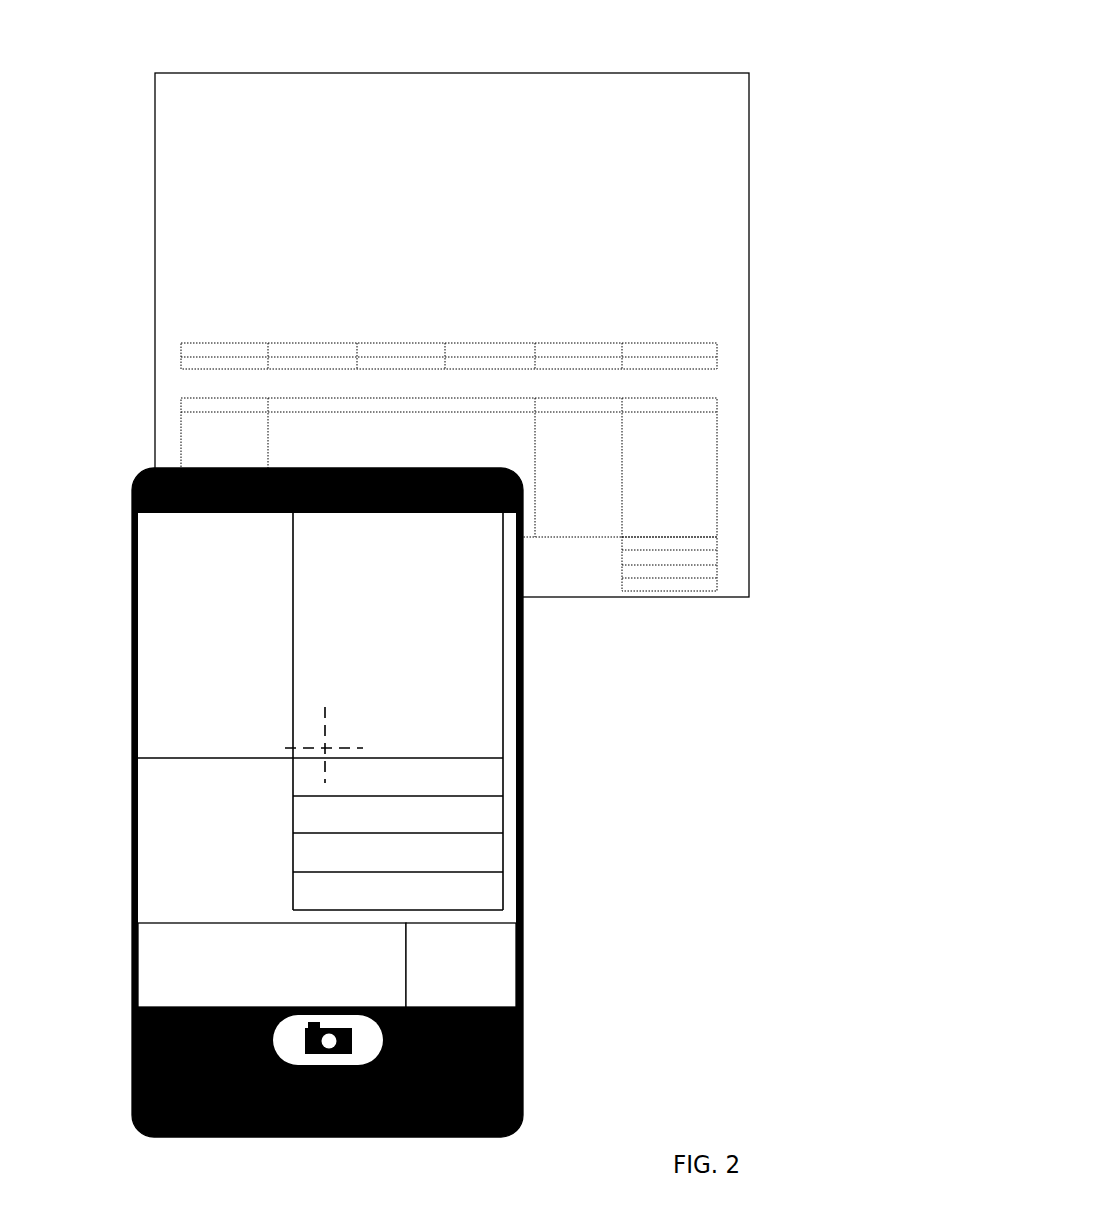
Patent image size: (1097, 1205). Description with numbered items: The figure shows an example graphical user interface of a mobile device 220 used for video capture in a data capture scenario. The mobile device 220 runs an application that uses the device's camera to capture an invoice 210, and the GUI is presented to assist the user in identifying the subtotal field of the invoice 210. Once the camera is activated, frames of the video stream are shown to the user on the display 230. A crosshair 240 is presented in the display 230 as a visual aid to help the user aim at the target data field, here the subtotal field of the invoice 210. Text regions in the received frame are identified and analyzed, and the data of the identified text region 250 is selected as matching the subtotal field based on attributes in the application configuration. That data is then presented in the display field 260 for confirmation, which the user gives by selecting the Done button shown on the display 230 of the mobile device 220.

The invoice 210 is at (652, 74).
The mobile device 220 is at (388, 760).
The display 230 is at (441, 718).
The crosshair 240 is at (365, 748).
The identified text region 250 is at (495, 776).
The display field 260 is at (274, 928).